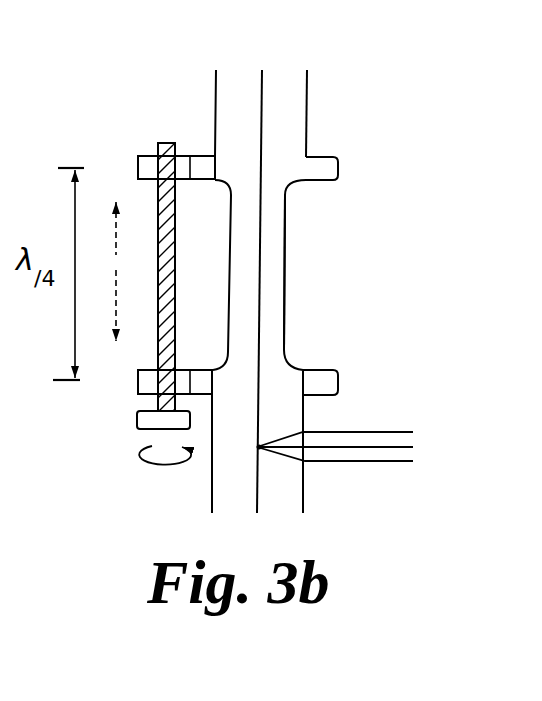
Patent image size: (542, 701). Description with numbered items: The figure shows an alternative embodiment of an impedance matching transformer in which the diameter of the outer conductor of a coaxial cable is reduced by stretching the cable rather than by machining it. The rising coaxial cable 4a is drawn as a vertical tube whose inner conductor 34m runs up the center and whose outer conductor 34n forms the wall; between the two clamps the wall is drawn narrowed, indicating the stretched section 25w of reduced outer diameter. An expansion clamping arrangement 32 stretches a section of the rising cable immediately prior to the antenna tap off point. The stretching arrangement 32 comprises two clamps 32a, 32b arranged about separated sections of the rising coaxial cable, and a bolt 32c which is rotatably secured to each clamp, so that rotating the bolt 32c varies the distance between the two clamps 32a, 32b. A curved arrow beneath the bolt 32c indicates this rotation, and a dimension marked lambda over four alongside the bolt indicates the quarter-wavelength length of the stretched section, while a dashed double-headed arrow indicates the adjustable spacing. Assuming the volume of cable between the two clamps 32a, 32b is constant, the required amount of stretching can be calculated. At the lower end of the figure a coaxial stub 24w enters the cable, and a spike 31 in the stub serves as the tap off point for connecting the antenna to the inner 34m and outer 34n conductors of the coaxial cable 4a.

The expansion clamping arrangement 32 is at (145, 260).
The bolt 32c is at (148, 213).
The clamp 32a is at (340, 174).
The clamp 32b is at (340, 382).
The inner conductor 34m is at (268, 85).
The outer conductor 34n is at (312, 85).
The coaxial cable 4a is at (306, 122).
The narrowed waveguide section 25w is at (300, 258).
The coaxial feed line 24w is at (362, 465).
The spike 31 is at (273, 463).